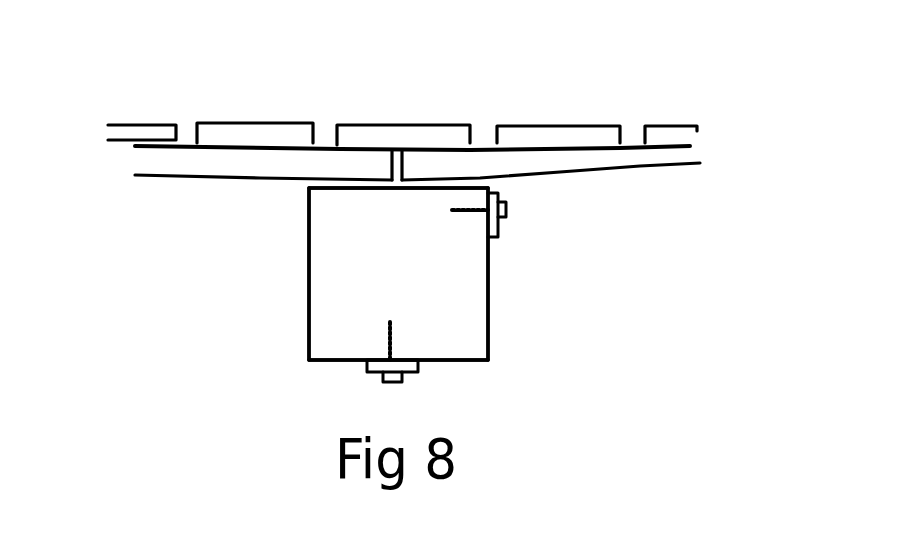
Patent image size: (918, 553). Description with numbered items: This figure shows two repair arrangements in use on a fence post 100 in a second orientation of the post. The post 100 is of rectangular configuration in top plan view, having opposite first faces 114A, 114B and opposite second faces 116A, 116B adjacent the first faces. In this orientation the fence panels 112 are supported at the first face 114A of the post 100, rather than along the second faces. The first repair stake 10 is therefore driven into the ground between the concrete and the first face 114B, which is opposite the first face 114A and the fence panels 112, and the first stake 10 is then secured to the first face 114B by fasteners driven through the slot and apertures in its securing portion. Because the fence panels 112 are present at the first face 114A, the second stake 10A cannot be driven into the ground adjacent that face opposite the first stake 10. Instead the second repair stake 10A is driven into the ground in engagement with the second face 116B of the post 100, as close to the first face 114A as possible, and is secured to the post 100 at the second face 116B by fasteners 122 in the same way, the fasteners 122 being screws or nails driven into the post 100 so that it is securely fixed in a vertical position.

The post 100 is at (287, 323).
The fence panels 112 is at (169, 157).
The first face 114A is at (335, 186).
The first face 114B is at (458, 362).
The second face 116A is at (309, 229).
The second face 116B is at (488, 265).
The fastener 122 is at (508, 211).
The stake 10 is at (358, 394).
The second stake 10A is at (519, 240).